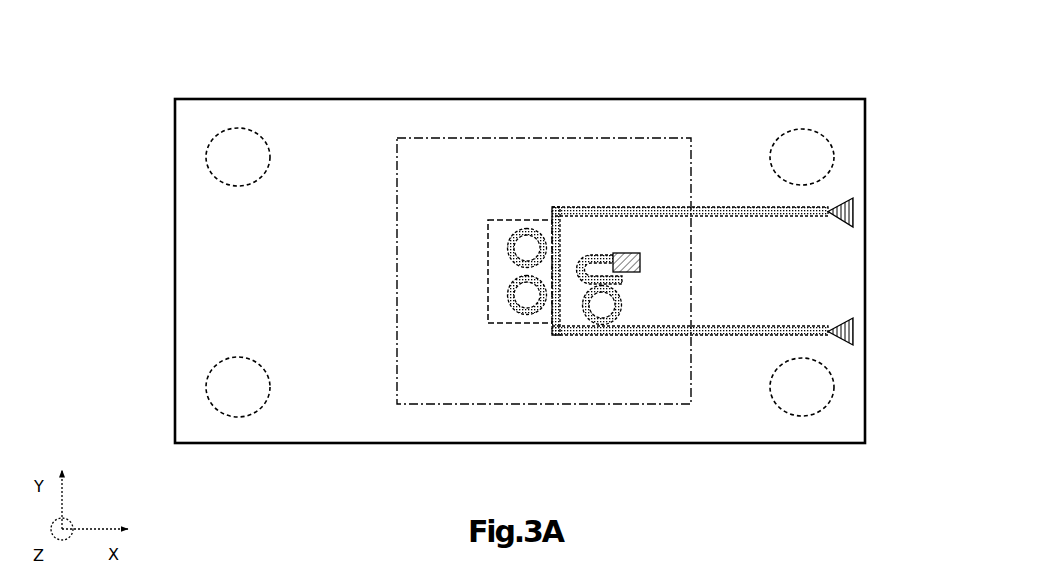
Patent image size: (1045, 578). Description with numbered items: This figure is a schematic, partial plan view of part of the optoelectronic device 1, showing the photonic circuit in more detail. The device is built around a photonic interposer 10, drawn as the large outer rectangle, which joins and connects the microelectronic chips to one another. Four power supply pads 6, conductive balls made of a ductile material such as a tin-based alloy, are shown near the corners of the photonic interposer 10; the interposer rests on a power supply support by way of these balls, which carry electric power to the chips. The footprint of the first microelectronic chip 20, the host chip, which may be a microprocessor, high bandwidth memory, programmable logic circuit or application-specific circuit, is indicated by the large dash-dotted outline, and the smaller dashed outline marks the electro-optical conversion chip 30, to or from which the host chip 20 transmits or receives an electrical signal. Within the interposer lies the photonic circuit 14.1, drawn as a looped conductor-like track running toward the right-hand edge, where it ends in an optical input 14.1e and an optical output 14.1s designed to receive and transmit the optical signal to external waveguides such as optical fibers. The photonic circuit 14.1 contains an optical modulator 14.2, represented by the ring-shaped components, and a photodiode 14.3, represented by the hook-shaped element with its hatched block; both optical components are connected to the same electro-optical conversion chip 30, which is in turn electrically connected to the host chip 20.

The optoelectronic device 1 is at (80, 92).
The photonic interposer 10 is at (168, 270).
The power supply pads 6 is at (277, 160).
The first microelectronic chip 20 is at (392, 273).
The electro-optical conversion chip 30 is at (481, 273).
The photonic circuit 14.1 is at (735, 206).
The optical input 14.1e is at (860, 206).
The optical output 14.1s is at (860, 326).
The optical modulator 14.2 is at (516, 222).
The photodiode 14.3 is at (648, 262).